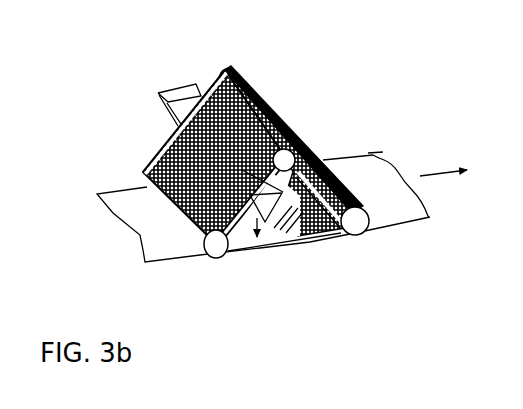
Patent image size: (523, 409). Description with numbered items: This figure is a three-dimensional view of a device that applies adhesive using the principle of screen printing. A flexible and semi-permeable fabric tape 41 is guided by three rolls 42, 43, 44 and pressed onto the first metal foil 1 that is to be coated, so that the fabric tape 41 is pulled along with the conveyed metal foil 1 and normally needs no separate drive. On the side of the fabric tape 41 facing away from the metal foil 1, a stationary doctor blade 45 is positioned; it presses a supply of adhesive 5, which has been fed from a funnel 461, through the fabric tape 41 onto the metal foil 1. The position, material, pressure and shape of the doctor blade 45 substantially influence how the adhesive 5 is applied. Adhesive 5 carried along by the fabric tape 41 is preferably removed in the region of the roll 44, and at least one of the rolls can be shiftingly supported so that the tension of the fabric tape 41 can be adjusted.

The first metal foil 1 is at (128, 243).
The adhesive 5 is at (378, 182).
The fabric tape 41 is at (156, 137).
The roll 42 is at (213, 262).
The roll 43 is at (228, 66).
The roll 44 is at (366, 238).
The doctor blade 45 is at (281, 233).
The funnel 461 is at (165, 80).